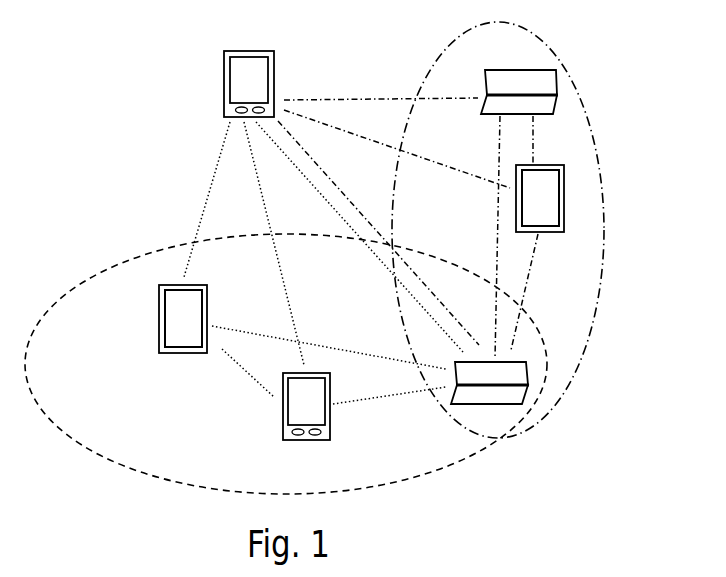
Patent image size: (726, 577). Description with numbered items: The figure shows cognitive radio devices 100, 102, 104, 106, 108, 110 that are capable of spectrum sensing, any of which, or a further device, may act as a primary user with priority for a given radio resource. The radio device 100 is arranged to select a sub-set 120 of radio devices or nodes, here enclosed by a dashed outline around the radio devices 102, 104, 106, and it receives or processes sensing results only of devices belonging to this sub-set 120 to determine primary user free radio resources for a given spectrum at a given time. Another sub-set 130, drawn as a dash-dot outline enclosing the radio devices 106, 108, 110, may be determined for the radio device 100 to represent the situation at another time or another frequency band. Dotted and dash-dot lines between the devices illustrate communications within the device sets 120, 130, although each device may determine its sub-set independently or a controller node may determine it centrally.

The radio device 100 is at (237, 93).
The radio device 102 is at (168, 333).
The radio device 104 is at (292, 418).
The radio device 106 is at (522, 400).
The radio device 108 is at (555, 215).
The radio device 110 is at (547, 105).
The sub-set 120 is at (117, 442).
The sub-set 130 is at (583, 283).